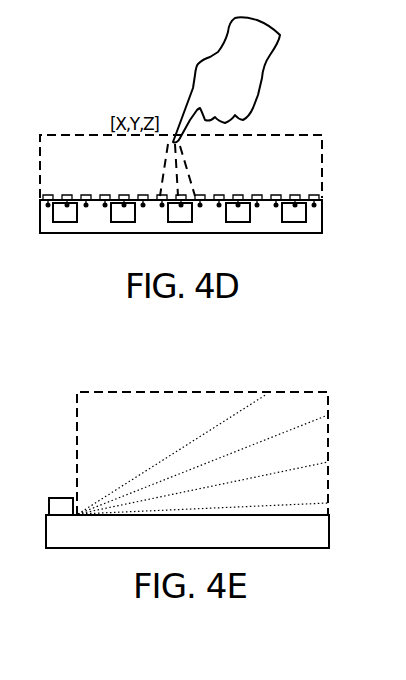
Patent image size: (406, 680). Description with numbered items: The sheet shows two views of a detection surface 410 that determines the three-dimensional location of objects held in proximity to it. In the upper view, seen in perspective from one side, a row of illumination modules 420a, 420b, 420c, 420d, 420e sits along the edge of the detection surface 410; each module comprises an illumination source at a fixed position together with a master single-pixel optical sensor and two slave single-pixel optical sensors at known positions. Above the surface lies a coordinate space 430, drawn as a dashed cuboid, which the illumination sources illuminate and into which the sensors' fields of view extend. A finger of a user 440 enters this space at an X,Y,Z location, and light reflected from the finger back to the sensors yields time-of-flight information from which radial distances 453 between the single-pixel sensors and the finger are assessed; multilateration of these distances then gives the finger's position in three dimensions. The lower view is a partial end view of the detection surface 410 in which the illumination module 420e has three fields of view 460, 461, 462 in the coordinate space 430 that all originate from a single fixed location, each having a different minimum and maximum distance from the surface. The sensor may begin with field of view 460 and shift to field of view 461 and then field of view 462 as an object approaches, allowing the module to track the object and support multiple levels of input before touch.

In FIG. 4D, the detection surface 410 is at (358, 201).
In FIG. 4E, the detection surface 410 is at (164, 532).
In FIG. 4D, the illumination module 420a is at (68, 235).
In FIG. 4D, the illumination module 420b is at (122, 235).
In FIG. 4D, the illumination module 420c is at (179, 235).
In FIG. 4D, the illumination module 420d is at (237, 235).
In FIG. 4D, the illumination module 420e is at (294, 235).
In FIG. 4E, the illumination module 420e is at (60, 496).
In FIG. 4D, the coordinate space 430 is at (322, 135).
In FIG. 4E, the coordinate space 430 is at (285, 392).
In FIG. 4D, the user 440 is at (244, 93).
In FIG. 4D, the radial distances 453 is at (148, 166).
In FIG. 4E, the field of view 460 is at (303, 424).
In FIG. 4E, the field of view 461 is at (313, 462).
In FIG. 4E, the field of view 462 is at (308, 502).